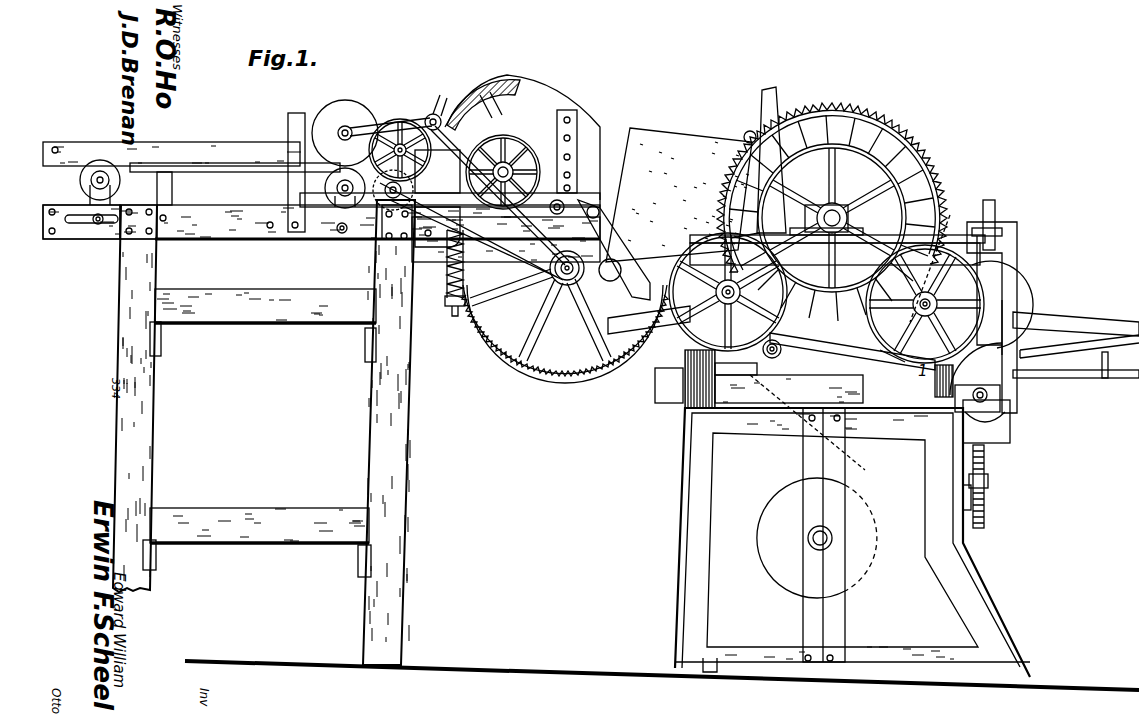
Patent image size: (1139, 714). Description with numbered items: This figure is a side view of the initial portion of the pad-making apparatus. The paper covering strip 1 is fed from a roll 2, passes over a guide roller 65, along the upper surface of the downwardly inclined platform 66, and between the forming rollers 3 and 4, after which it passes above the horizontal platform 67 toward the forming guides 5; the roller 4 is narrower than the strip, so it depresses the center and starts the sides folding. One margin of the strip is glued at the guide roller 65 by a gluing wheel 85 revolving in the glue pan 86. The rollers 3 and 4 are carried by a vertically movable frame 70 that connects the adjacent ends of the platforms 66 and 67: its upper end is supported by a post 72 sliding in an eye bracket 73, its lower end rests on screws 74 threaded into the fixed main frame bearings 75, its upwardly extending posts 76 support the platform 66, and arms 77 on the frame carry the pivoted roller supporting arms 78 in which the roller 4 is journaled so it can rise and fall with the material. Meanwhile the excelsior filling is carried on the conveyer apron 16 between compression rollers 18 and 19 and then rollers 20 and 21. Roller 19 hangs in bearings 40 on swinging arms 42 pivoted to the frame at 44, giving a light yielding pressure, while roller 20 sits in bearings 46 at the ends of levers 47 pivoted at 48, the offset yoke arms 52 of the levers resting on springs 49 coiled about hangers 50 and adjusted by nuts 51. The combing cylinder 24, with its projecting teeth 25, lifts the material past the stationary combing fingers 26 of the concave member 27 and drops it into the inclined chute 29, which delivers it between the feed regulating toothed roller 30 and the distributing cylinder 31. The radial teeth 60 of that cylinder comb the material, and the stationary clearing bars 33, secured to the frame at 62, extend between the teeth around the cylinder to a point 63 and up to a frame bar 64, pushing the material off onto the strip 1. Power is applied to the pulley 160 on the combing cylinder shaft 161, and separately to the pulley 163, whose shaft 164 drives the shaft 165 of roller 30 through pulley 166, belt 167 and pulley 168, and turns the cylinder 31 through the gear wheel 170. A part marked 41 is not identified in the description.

The paper covering strip 1 is at (843, 494).
The roll 2 is at (817, 538).
The forming roller 3 is at (976, 369).
The forming roller 4 is at (993, 329).
The forming guides 5 is at (1108, 378).
The conveyer apron 16 is at (116, 182).
The compression roller 18 is at (330, 193).
The compression roller 19 is at (345, 133).
The compression roller 20 is at (416, 208).
The compression roller 21 is at (372, 154).
The combing cylinder 24 is at (490, 88).
The projecting teeth 25 is at (470, 95).
The stationary combing fingers 26 is at (455, 100).
The concave member 27 is at (437, 105).
The inclined chute 29 is at (679, 195).
The feed regulating toothed roller 30 is at (728, 292).
The distributing cylinder 31 is at (872, 160).
The stationary clearing bars 33 is at (822, 346).
The bearings 40 is at (360, 125).
The bracket 41 is at (990, 405).
The swinging arms 42 is at (392, 118).
The pivot 44 is at (425, 121).
The bearings 46 is at (388, 198).
The levers 47 is at (450, 205).
The pivot 48 is at (589, 250).
The springs 49 is at (447, 266).
The hangers 50 is at (456, 310).
The spring adjusting nuts 51 is at (445, 301).
The offset yoke arms 52 is at (482, 227).
The radial teeth 60 is at (918, 143).
The securing point 62 is at (950, 232).
The point 63 is at (745, 138).
The frame bar 64 is at (776, 82).
The guide roller 65 is at (782, 351).
The platform 66 is at (898, 362).
The platform 67 is at (1084, 384).
The vertically movable frame 70 is at (1017, 268).
The post 72 is at (1002, 236).
The eye bracket 73 is at (997, 225).
The vertically movable screws 74 is at (989, 486).
The fixed main frame bearings 75 is at (990, 481).
The upwardly extending posts 76 is at (938, 385).
The arms 77 is at (1079, 349).
The roller supporting arms 78 is at (1100, 324).
The gluing wheel 85 is at (684, 372).
The glue pan 86 is at (789, 384).
The pulley 160 is at (509, 163).
The combing cylinder shaft 161 is at (517, 165).
The pulley 163 is at (1017, 289).
The shaft 164 is at (938, 305).
The shaft 165 is at (716, 294).
The pulley 166 is at (913, 305).
The belt 167 is at (785, 258).
The pulley 168 is at (697, 276).
The gear wheel 170 is at (858, 112).